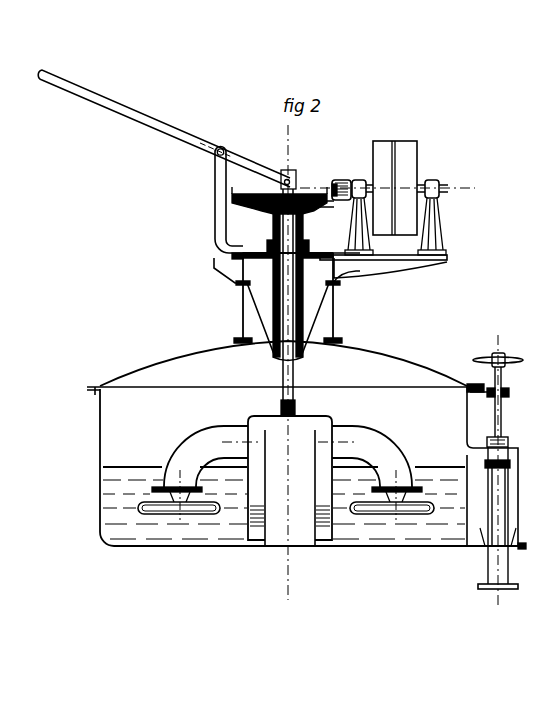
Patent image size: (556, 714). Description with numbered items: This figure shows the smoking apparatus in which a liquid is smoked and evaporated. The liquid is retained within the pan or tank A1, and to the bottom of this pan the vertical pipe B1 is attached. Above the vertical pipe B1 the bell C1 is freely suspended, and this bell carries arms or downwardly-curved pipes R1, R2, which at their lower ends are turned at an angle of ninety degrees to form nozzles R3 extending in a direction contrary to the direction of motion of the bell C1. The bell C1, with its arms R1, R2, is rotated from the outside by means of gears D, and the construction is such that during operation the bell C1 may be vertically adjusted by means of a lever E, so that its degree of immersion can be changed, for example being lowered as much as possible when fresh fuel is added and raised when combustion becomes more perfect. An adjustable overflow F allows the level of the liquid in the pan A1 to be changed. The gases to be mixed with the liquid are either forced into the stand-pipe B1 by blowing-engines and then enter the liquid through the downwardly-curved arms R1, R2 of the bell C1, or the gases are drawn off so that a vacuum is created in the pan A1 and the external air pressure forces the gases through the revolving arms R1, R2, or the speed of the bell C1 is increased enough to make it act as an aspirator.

The lever E is at (167, 129).
The gears D is at (387, 200).
The pan or tank A1 is at (306, 445).
The vertical pipe B1 is at (290, 473).
The bell C1 is at (290, 485).
The downwardly-curved pipe R1 is at (213, 464).
The downwardly-curved pipe R2 is at (365, 464).
The nozzles R3 is at (286, 495).
The overflow F is at (499, 470).